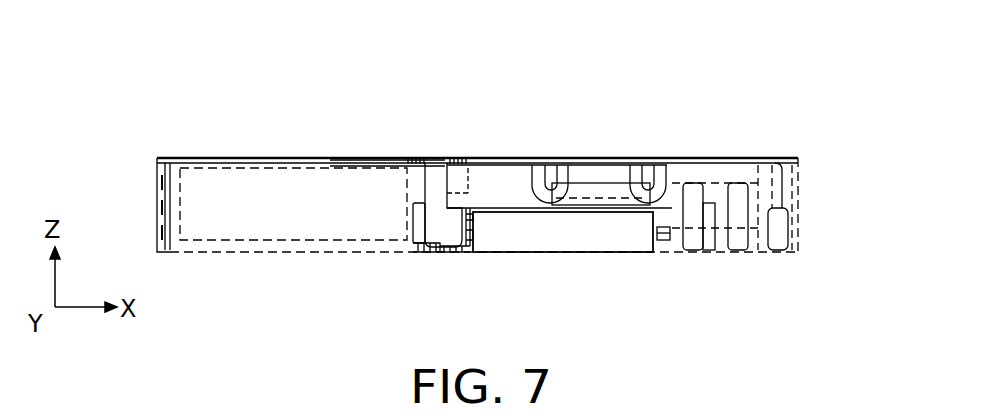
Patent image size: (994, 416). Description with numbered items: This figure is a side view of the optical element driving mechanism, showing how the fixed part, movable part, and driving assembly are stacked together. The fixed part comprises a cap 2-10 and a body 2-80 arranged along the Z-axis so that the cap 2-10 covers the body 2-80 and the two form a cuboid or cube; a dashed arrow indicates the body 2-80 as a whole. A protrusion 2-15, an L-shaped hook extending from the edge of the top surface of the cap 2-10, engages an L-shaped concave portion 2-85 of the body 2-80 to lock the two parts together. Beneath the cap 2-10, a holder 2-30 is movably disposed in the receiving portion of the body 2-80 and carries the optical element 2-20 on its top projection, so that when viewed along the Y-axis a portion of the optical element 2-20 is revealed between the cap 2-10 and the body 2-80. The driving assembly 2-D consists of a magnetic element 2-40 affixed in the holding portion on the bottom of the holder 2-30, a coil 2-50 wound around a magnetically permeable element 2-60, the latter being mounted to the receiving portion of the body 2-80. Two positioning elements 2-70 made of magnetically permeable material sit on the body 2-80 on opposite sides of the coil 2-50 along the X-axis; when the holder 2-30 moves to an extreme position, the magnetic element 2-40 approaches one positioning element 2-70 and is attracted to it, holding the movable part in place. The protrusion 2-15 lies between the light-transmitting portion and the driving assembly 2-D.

The cap 2-10 is at (223, 158).
The protrusion 2-15 is at (438, 160).
The optical element 2-20 is at (375, 158).
The holder 2-30 is at (568, 160).
The magnetic element 2-40 is at (605, 160).
The coil 2-50 is at (560, 243).
The magnetically permeable element 2-60 is at (663, 241).
The positioning element 2-70 is at (418, 252).
The body 2-80 is at (803, 198).
The concave portion 2-85 is at (453, 253).
The driving assembly 2-D is at (100, 12).